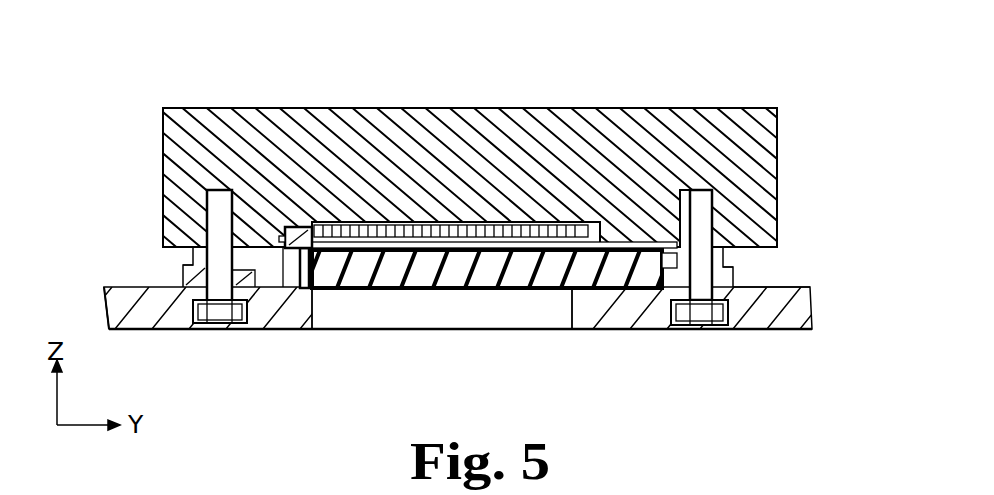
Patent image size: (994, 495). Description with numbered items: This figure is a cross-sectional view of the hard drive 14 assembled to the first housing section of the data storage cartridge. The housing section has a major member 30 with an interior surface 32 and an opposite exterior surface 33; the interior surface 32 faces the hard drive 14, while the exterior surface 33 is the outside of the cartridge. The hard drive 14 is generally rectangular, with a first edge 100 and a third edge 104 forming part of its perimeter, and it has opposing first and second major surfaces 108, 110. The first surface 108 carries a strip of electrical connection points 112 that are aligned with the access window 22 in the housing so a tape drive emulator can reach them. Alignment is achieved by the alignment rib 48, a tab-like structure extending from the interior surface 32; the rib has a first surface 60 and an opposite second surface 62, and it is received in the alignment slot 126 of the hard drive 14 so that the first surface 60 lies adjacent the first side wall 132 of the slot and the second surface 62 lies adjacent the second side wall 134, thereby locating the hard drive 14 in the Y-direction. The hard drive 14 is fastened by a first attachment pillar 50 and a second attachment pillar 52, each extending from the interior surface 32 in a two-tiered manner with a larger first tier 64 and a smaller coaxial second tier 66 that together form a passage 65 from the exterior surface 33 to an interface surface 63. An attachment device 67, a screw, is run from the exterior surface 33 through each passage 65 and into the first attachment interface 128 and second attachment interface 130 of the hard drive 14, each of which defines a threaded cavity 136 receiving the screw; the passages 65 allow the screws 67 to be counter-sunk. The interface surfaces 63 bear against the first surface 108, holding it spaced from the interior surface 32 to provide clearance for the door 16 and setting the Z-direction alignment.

The hard drive 14 is at (536, 100).
The door 16 is at (520, 289).
The access window 22 is at (570, 310).
The major member 30 is at (772, 334).
The interior surface 32 is at (810, 282).
The exterior surface 33 is at (657, 330).
The alignment rib 48 is at (231, 189).
The first attachment pillar 50 is at (736, 236).
The second attachment pillar 52 is at (147, 330).
The first surface 60 is at (306, 228).
The second surface 62 is at (288, 232).
The interface surface 63 is at (163, 216).
The first tier 64 is at (182, 274).
The passage 65 is at (238, 330).
The second tier 66 is at (163, 228).
The attachment device 67 is at (213, 314).
The first edge 100 is at (778, 178).
The third edge 104 is at (163, 190).
The first surface 108 is at (174, 265).
The second surface 110 is at (720, 107).
The electrical connection point 112 is at (385, 228).
The alignment slot 126 is at (298, 241).
The first attachment interface 128 is at (733, 188).
The second attachment interface 130 is at (185, 198).
The first side wall 132 is at (305, 280).
The second side wall 134 is at (266, 283).
The threaded cavity 136 is at (163, 112).